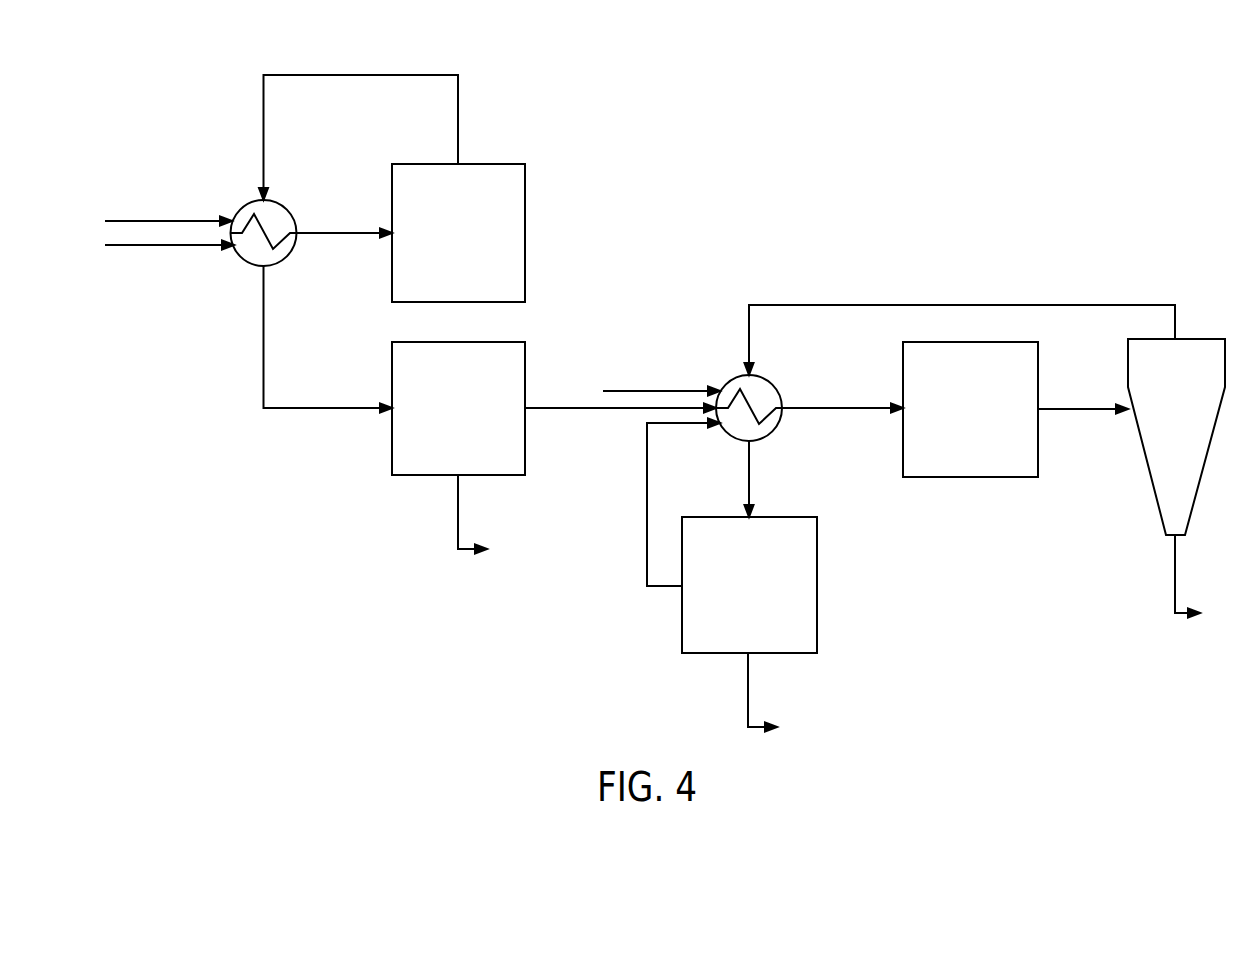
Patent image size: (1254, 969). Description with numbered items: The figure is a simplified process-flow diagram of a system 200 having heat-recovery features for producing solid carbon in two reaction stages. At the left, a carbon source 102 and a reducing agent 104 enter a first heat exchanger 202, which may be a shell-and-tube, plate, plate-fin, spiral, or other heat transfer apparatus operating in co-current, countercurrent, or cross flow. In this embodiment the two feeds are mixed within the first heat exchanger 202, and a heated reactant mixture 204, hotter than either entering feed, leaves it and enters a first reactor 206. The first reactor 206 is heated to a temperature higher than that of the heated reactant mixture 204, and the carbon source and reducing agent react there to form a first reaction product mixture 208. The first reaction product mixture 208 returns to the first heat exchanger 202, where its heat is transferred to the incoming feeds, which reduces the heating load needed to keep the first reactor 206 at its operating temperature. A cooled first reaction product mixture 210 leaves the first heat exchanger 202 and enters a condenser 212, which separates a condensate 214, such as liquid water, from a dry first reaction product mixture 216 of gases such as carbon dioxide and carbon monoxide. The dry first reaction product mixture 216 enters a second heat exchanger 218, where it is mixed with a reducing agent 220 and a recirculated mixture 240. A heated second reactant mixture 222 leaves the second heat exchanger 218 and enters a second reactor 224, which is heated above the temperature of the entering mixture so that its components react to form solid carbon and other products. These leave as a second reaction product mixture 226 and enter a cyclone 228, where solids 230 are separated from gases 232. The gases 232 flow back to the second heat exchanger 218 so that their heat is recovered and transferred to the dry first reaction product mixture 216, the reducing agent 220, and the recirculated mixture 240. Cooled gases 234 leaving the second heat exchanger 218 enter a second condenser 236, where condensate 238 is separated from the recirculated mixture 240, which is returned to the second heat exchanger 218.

The system 200 is at (1162, 140).
The carbon source 102 is at (143, 218).
The reducing agent 104 is at (168, 247).
The first heat exchanger 202 is at (241, 207).
The heated reactant mixture 204 is at (335, 230).
The first reactor 206 is at (472, 245).
The first reaction product mixture 208 is at (310, 74).
The cooled first reaction product mixture 210 is at (300, 410).
The condenser 212 is at (472, 420).
The condensate 214 is at (457, 525).
The dry first reaction product mixture 216 is at (578, 410).
The second heat exchanger 218 is at (734, 380).
The reducing agent 220 is at (618, 388).
The heated second reactant mixture 222 is at (828, 405).
The second reactor 224 is at (984, 421).
The second reaction product mixture 226 is at (1082, 407).
The cyclone 228 is at (1189, 421).
The solids 230 is at (1178, 583).
The gases 232 is at (850, 303).
The cooled gases 234 is at (752, 482).
The second condenser 236 is at (763, 598).
The condensate 238 is at (750, 705).
The recirculated mixture 240 is at (646, 500).